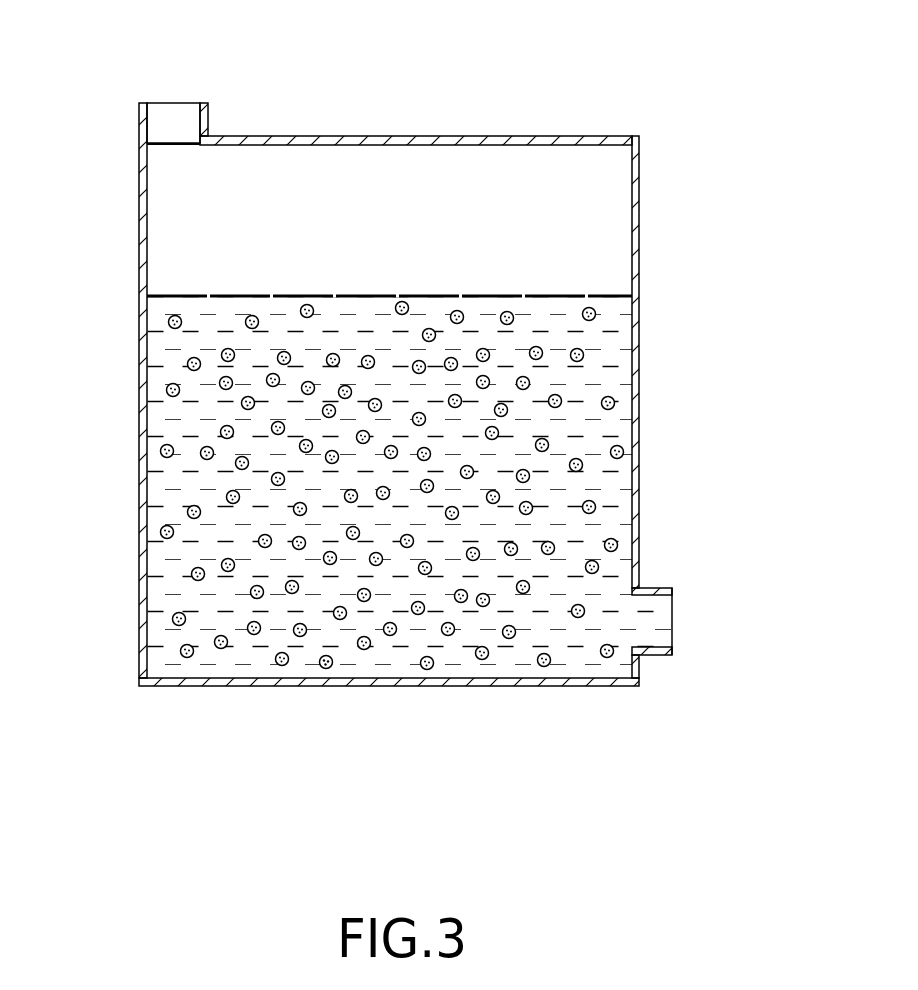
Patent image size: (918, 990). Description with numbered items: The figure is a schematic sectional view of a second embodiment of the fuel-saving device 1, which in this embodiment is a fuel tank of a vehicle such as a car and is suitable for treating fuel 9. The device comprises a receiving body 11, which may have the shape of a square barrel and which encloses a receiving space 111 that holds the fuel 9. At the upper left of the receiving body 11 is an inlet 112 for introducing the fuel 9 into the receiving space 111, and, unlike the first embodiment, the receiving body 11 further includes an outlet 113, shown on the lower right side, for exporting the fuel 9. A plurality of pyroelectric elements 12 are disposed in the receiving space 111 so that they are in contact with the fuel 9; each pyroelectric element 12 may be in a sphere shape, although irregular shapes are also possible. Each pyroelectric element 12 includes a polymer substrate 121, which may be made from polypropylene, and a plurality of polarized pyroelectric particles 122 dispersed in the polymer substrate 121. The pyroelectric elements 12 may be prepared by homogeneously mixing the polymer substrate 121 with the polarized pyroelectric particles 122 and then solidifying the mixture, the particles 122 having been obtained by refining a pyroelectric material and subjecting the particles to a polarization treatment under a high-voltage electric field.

The fuel-saving device 1 is at (120, 165).
The fuel 9 is at (157, 558).
The receiving body 11 is at (651, 357).
The receiving space 111 is at (595, 221).
The inlet 112 is at (173, 103).
The outlet 113 is at (673, 620).
The pyroelectric element 12 is at (248, 646).
The polymer substrate 121 is at (332, 666).
The polarized pyroelectric particles 122 is at (324, 667).